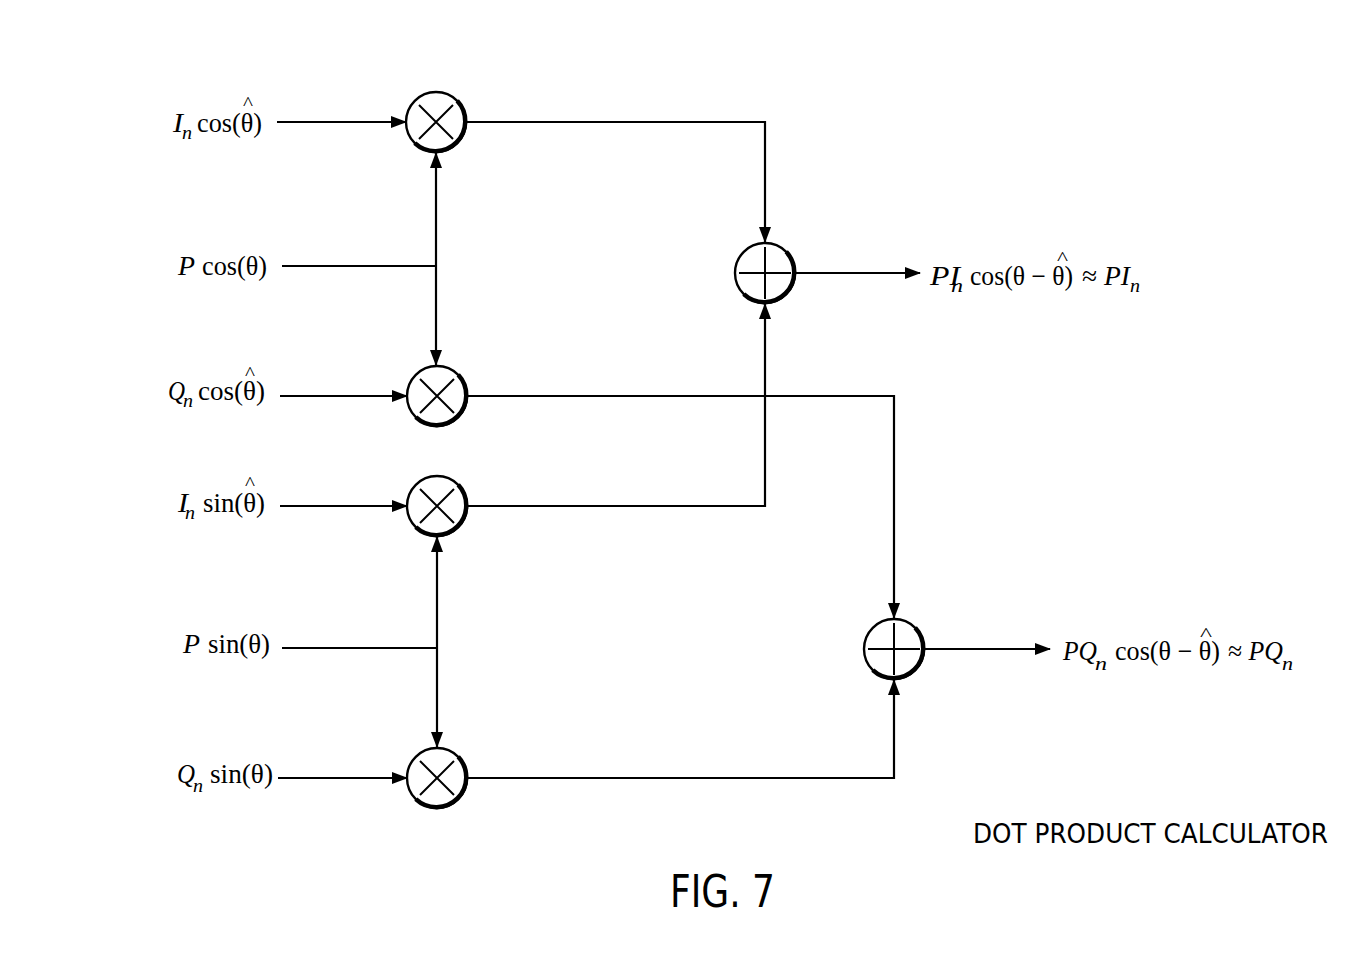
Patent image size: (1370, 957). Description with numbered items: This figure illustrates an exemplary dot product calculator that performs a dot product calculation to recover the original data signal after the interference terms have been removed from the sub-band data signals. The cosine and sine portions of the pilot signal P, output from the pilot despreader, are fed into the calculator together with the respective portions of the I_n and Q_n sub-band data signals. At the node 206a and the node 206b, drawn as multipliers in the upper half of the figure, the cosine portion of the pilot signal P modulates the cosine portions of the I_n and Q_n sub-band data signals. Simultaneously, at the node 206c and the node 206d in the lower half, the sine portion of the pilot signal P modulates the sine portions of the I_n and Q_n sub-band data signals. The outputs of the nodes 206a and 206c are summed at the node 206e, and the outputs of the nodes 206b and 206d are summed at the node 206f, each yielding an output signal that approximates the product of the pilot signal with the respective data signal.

The node 206a is at (458, 98).
The node 206b is at (458, 368).
The node 206c is at (458, 479).
The node 206d is at (458, 750).
The node 206e is at (790, 250).
The node 206f is at (917, 625).